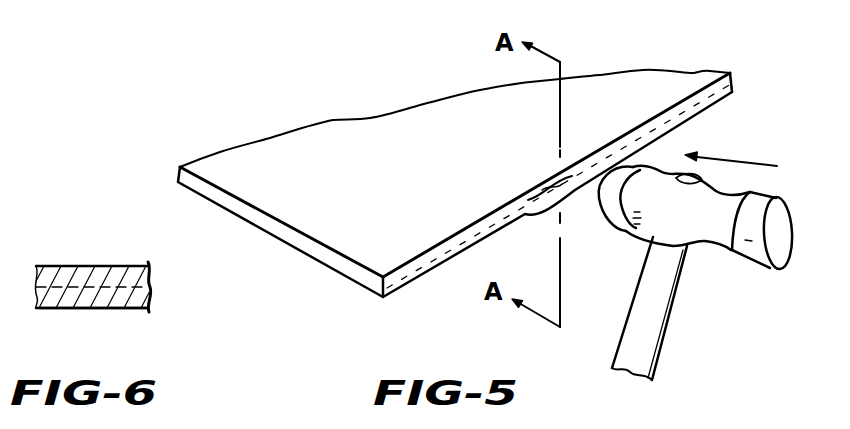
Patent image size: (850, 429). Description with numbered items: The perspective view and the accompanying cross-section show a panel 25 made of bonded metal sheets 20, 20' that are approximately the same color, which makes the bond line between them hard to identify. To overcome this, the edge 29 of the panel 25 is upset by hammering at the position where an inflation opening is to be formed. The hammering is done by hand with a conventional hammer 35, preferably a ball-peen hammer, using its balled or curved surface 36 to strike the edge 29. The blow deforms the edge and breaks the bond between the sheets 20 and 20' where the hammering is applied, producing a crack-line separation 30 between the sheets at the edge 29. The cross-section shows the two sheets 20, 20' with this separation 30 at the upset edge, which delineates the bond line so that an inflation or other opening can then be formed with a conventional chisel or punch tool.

In FIG. 6, the sheet 20 is at (92, 264).
In FIG. 6, the sheet 20' is at (85, 330).
In FIG. 5, the panel 25 is at (322, 165).
In FIG. 5, the edge 29 is at (433, 268).
In FIG. 6, the edge 29 is at (151, 265).
In FIG. 5, the crack-line separation 30 is at (560, 188).
In FIG. 6, the crack-line separation 30 is at (150, 287).
In FIG. 5, the hammer 35 is at (650, 328).
In FIG. 5, the balled surface 36 is at (640, 165).